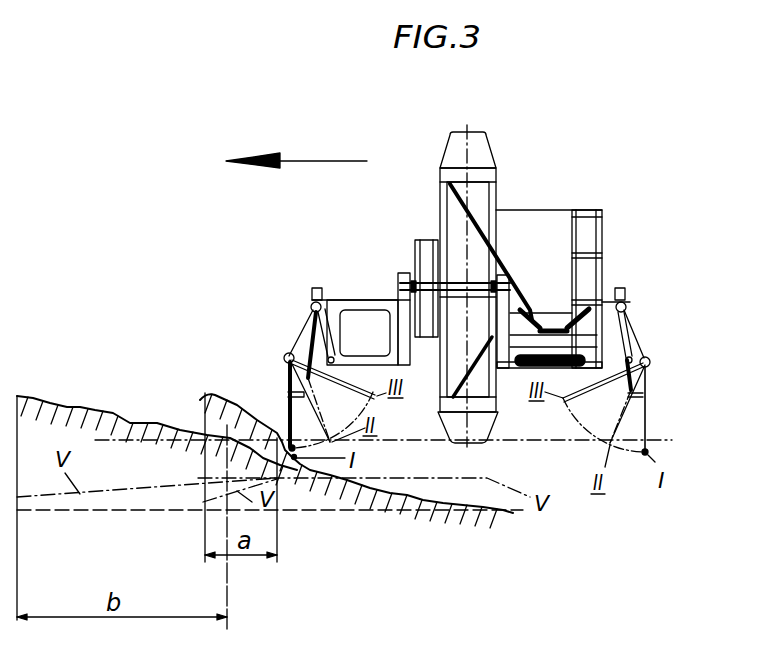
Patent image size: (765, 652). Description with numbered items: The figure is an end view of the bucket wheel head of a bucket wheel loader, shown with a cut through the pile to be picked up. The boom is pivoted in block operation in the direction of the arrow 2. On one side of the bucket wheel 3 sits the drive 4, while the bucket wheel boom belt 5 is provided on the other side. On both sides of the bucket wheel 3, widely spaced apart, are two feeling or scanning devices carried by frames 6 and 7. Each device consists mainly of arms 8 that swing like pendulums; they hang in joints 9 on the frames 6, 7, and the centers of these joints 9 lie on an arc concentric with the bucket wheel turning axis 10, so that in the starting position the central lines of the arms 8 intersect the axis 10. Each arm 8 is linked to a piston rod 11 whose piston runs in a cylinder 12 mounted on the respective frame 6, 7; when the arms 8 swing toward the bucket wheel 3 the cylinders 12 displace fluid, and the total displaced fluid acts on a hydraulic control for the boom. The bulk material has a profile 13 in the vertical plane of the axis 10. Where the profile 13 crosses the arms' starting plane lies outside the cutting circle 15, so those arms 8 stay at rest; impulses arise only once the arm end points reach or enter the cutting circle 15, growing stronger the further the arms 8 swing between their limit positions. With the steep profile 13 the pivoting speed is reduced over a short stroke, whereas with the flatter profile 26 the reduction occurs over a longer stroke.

The arrow 2 is at (315, 161).
The bucket wheel 3 is at (478, 192).
The drive 4 is at (425, 250).
The bucket wheel boom belt 5 is at (552, 327).
The frame 6 is at (360, 302).
The frame 7 is at (608, 308).
The arms 8 is at (646, 414).
The joints 9 is at (650, 360).
The bucket wheel turning axis 10 is at (548, 290).
The piston rod 11 is at (628, 386).
The cylinders 12 is at (627, 333).
The profile 13 is at (223, 393).
The cutting circle 15 is at (530, 443).
The profile 26 is at (82, 407).